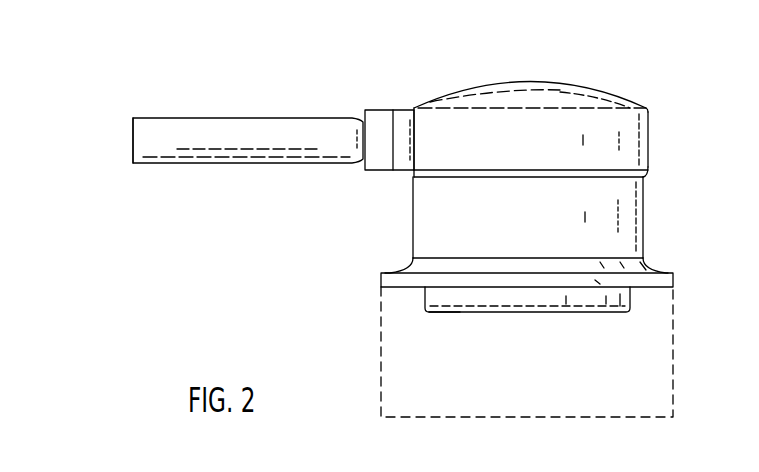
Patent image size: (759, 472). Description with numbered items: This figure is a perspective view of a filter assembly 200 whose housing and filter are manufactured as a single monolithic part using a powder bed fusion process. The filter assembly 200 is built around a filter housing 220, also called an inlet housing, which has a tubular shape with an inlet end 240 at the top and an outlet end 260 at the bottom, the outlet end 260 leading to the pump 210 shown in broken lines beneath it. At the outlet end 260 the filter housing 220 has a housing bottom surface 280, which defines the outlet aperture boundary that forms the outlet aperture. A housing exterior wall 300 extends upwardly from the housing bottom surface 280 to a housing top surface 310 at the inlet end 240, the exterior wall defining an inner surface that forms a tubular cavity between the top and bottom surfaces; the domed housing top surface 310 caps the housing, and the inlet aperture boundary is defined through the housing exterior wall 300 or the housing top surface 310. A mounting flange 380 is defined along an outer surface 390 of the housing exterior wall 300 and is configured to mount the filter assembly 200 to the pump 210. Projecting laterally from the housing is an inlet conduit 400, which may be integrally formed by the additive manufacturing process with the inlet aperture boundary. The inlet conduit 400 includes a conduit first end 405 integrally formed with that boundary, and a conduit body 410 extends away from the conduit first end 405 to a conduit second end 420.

The filter assembly 200 is at (415, 220).
The pump 210 is at (527, 352).
The filter housing 220 is at (555, 136).
The inlet end 240 is at (516, 77).
The outlet end 260 is at (527, 336).
The housing bottom surface 280 is at (389, 351).
The housing exterior wall 300 is at (563, 217).
The housing top surface 310 is at (531, 73).
The mounting flange 380 is at (556, 261).
The outer surface 390 is at (560, 177).
The inlet conduit 400 is at (225, 155).
The conduit first end 405 is at (371, 172).
The conduit body 410 is at (246, 190).
The conduit second end 420 is at (114, 168).